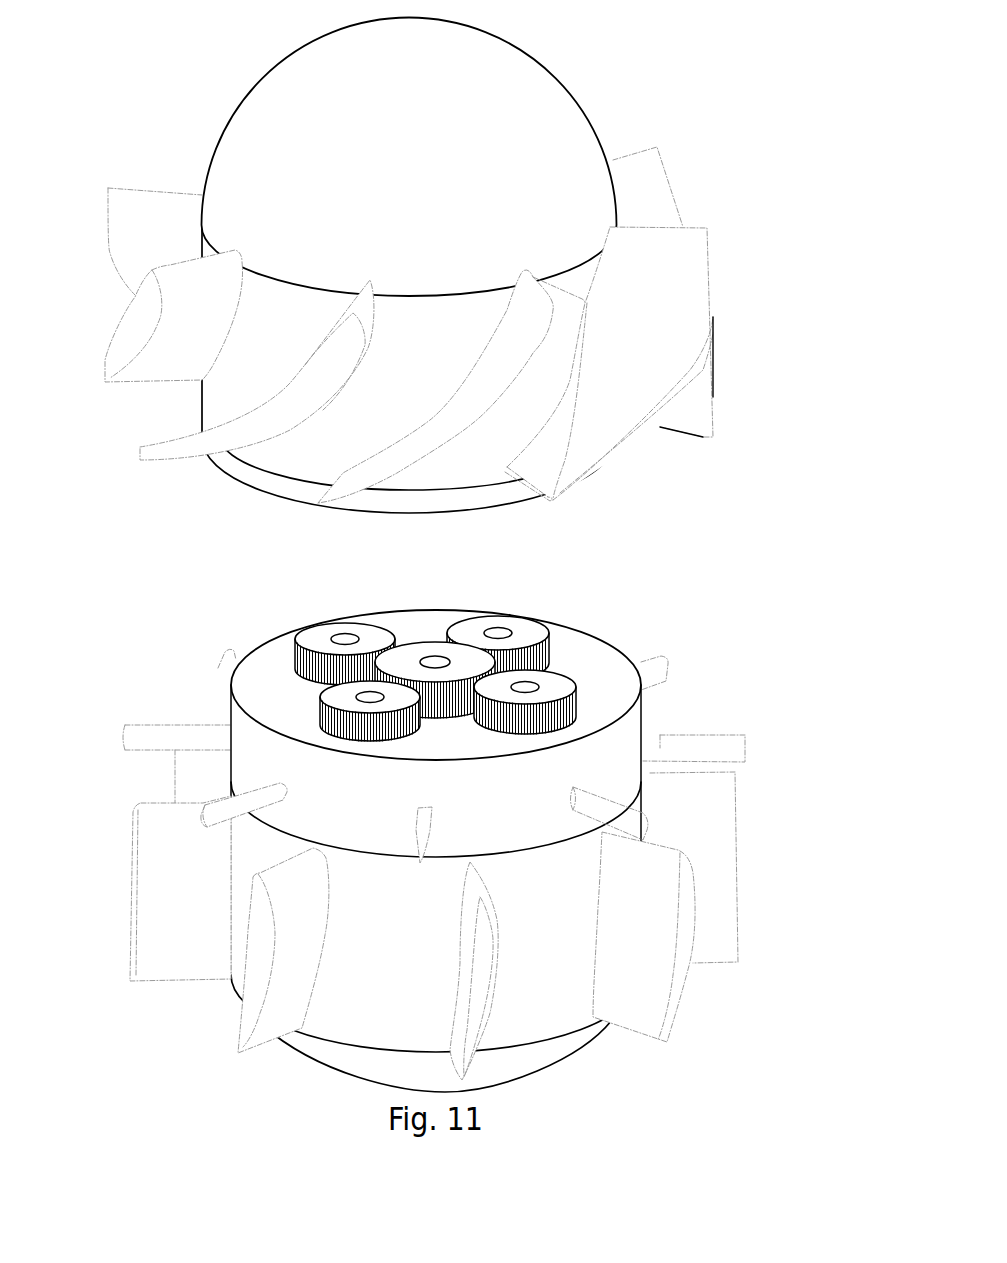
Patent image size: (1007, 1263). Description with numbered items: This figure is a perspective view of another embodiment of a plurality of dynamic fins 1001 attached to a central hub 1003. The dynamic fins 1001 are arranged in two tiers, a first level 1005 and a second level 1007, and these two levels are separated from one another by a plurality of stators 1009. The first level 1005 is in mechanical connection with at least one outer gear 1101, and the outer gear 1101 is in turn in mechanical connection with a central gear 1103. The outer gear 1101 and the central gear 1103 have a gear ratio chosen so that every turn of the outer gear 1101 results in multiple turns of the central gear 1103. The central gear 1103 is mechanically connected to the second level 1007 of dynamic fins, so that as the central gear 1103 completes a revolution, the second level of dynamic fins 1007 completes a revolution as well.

The dynamic fins 1001 is at (662, 238).
The central hub 1003 is at (560, 70).
The first level 1005 is at (476, 266).
The second level 1007 is at (489, 797).
The stators 1009 is at (745, 747).
The outer gear 1101 is at (537, 629).
The central gear 1103 is at (462, 660).